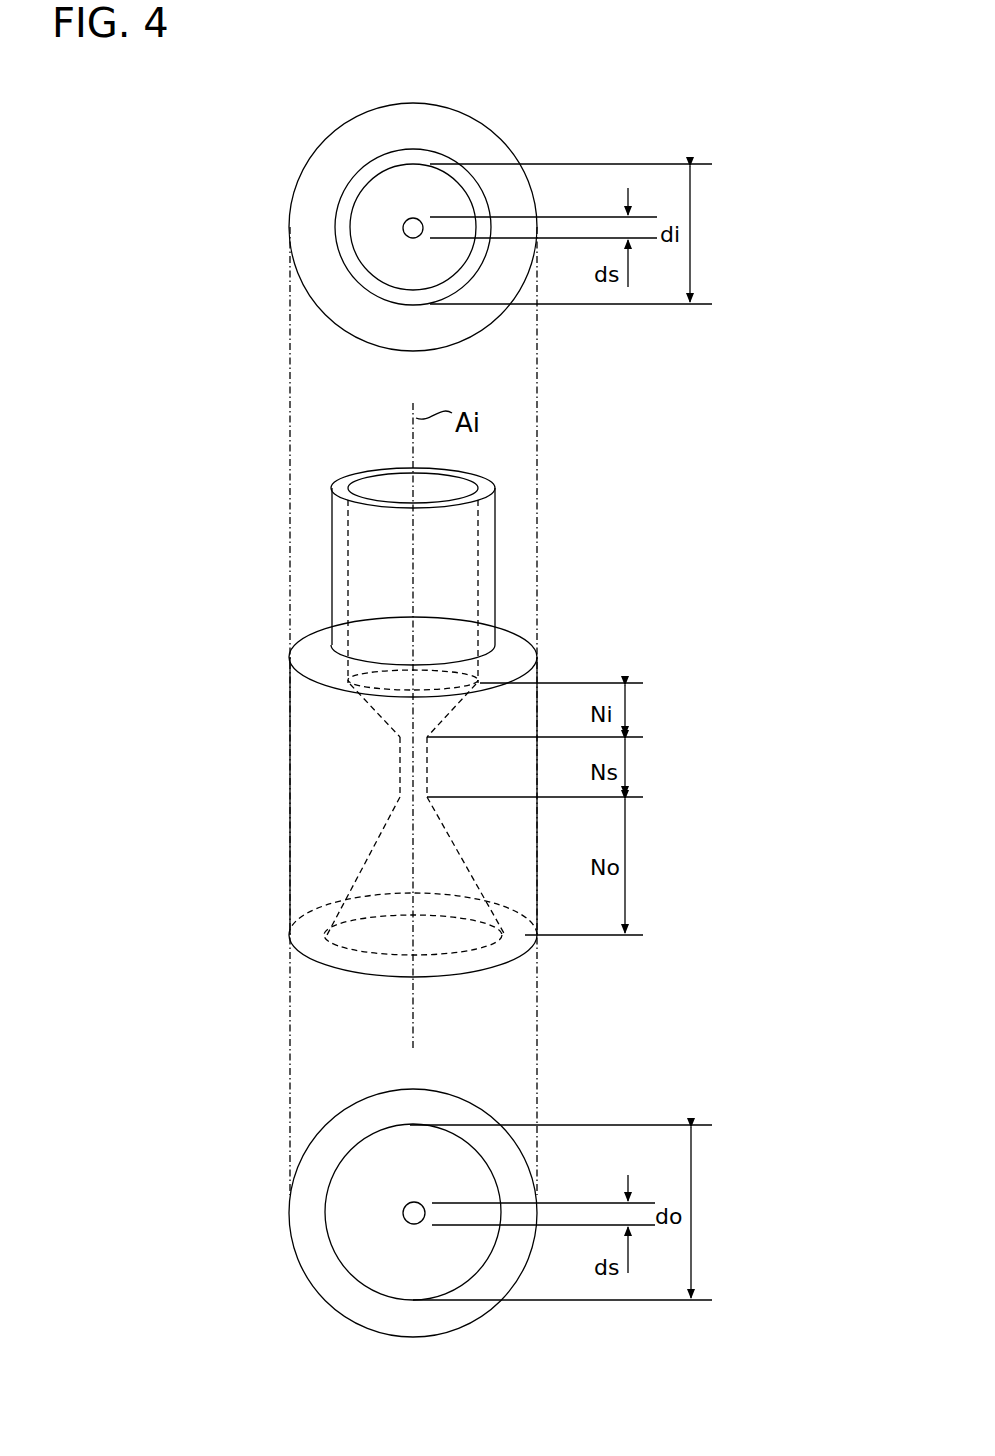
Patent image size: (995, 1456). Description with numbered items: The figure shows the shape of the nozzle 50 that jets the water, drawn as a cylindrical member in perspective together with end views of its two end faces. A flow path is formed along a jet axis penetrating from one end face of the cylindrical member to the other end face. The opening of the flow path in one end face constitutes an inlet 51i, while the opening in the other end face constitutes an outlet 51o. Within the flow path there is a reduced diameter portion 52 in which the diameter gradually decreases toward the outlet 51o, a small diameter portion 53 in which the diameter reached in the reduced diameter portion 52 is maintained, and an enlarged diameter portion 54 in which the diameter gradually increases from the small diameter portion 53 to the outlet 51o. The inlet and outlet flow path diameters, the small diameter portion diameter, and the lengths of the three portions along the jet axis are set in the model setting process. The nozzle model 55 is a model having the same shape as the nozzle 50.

The nozzle 50 is at (256, 618).
The nozzle model 55 is at (377, 720).
The inlet 51i is at (377, 177).
The outlet 51o is at (332, 942).
The reduced diameter portion 52 is at (362, 216).
The small diameter portion 53 is at (406, 228).
The enlarged diameter portion 54 is at (355, 878).